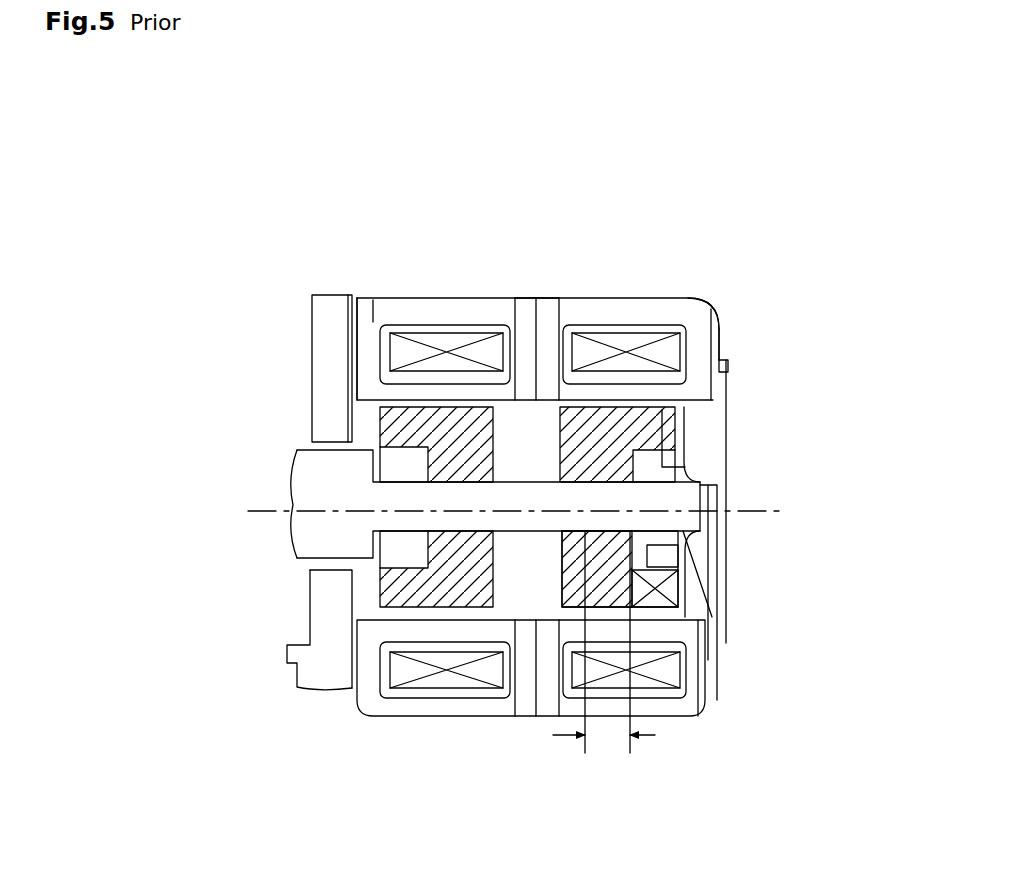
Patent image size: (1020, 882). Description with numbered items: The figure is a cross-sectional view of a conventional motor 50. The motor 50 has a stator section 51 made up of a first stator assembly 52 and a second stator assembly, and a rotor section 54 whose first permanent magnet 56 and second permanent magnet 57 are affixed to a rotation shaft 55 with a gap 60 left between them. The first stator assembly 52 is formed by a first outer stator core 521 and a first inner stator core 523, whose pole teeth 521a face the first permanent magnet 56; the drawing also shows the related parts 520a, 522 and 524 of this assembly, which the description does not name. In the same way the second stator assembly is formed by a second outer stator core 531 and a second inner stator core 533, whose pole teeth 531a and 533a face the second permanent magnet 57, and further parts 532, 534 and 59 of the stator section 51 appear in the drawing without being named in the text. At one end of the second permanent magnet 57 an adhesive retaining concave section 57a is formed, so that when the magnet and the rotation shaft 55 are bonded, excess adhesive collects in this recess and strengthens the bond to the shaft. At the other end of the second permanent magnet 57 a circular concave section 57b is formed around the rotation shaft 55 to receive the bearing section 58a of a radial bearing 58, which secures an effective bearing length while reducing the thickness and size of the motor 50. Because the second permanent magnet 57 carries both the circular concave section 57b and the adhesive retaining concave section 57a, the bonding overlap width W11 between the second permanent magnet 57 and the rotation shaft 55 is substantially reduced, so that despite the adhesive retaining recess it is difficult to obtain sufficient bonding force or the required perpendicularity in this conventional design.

The motor 50 is at (750, 338).
The stator section 51 is at (500, 195).
The first stator assembly 52 is at (450, 297).
The bobbin 520a is at (500, 390).
The first outer stator core 521 is at (350, 298).
The pole teeth 521a is at (373, 322).
The bracket 522 is at (375, 356).
The first inner stator core 523 is at (524, 330).
The coil 524 is at (420, 392).
The second outer stator core 531 is at (720, 313).
The pole teeth 531a is at (690, 387).
The core plate 532 is at (700, 340).
The second inner stator core 533 is at (549, 330).
The pole teeth 533a is at (598, 392).
The coil 534 is at (640, 340).
The coil assembly 59 is at (636, 297).
The rotor section 54 is at (552, 765).
The rotation shaft 55 is at (372, 550).
The first permanent magnet 56 is at (420, 593).
The second permanent magnet 57 is at (584, 672).
The adhesive retaining concave section 57a is at (560, 543).
The circular concave section 57b is at (686, 550).
The radial bearing 58 is at (710, 462).
The bearing section 58a is at (715, 546).
The gap 60 is at (392, 486).
The bonding overlap width W11 is at (604, 656).